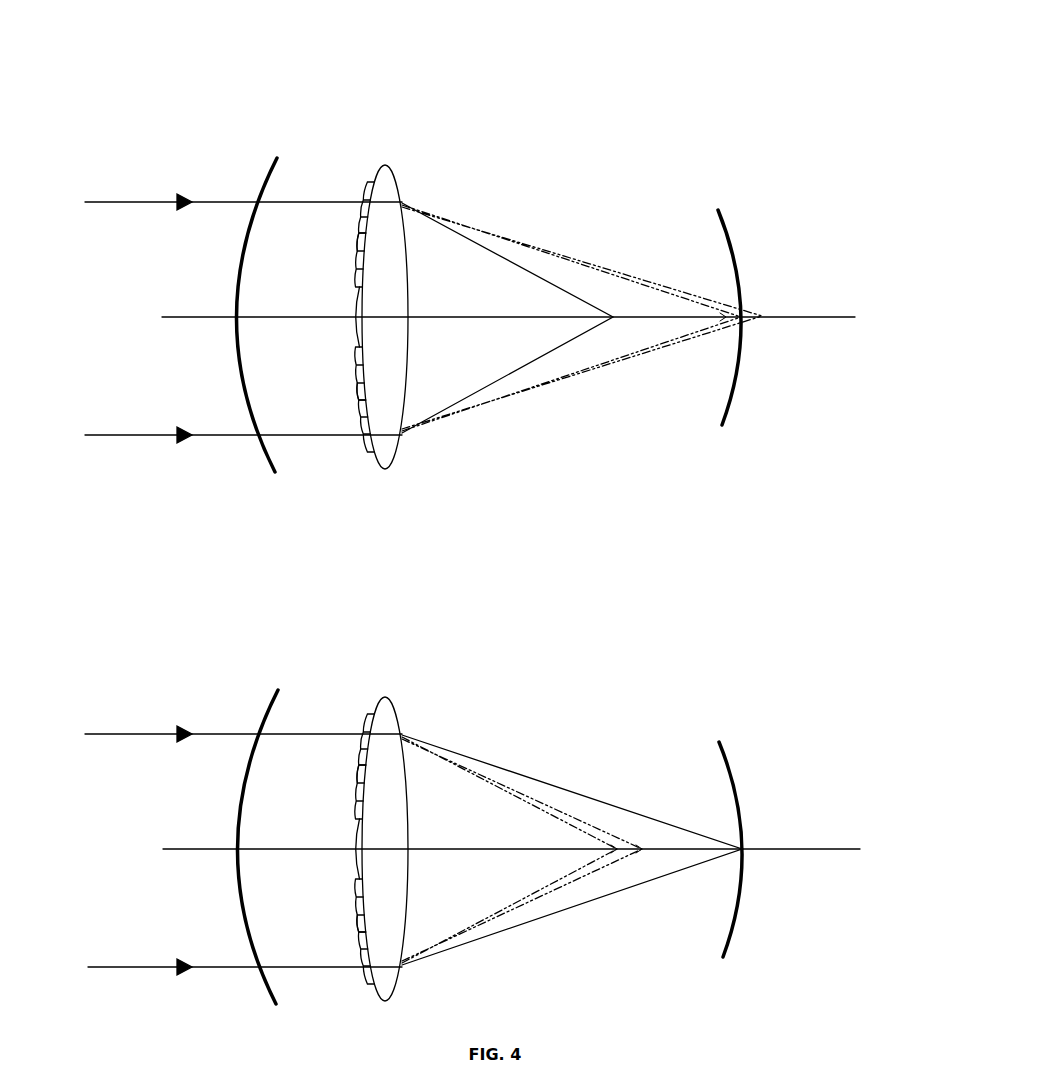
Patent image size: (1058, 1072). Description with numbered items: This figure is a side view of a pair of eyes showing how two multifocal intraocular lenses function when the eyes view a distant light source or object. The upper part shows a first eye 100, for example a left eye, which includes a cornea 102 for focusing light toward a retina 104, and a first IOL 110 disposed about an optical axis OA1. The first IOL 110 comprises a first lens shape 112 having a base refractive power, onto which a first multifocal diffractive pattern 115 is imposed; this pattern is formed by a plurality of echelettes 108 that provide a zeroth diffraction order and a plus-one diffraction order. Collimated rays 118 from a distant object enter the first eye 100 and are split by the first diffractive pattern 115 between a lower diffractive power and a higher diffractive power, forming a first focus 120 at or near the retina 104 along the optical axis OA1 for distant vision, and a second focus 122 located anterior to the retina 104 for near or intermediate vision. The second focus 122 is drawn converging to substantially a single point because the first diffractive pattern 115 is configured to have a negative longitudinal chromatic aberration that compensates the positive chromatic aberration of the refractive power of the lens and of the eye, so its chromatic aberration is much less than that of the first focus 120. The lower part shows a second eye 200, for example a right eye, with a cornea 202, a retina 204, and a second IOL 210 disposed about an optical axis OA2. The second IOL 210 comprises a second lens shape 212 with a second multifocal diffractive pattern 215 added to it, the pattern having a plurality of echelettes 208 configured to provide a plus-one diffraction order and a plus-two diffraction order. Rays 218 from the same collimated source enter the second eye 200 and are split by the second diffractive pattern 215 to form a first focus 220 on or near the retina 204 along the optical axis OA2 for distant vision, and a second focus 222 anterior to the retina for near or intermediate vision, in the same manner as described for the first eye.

The first eye 100 is at (775, 138).
The cornea 102 is at (267, 177).
The retina 104 is at (723, 233).
The echelettes 108 is at (362, 395).
The first IOL 110 is at (400, 188).
The first lens shape 112 is at (377, 178).
The first multifocal diffractive pattern 115 is at (363, 243).
The rays 118 is at (97, 202).
The first focus 120 is at (737, 318).
The second focus 122 is at (614, 313).
The optical axis OA1 is at (185, 317).
The second eye 200 is at (775, 672).
The cornea 202 is at (268, 710).
The retina 204 is at (728, 772).
The echelettes 208 is at (362, 927).
The second IOL 210 is at (400, 720).
The second lens shape 212 is at (353, 808).
The second multifocal diffractive pattern 215 is at (363, 781).
The rays 218 is at (97, 734).
The first focus 220 is at (740, 851).
The second focus 222 is at (623, 843).
The optical axis OA2 is at (185, 849).